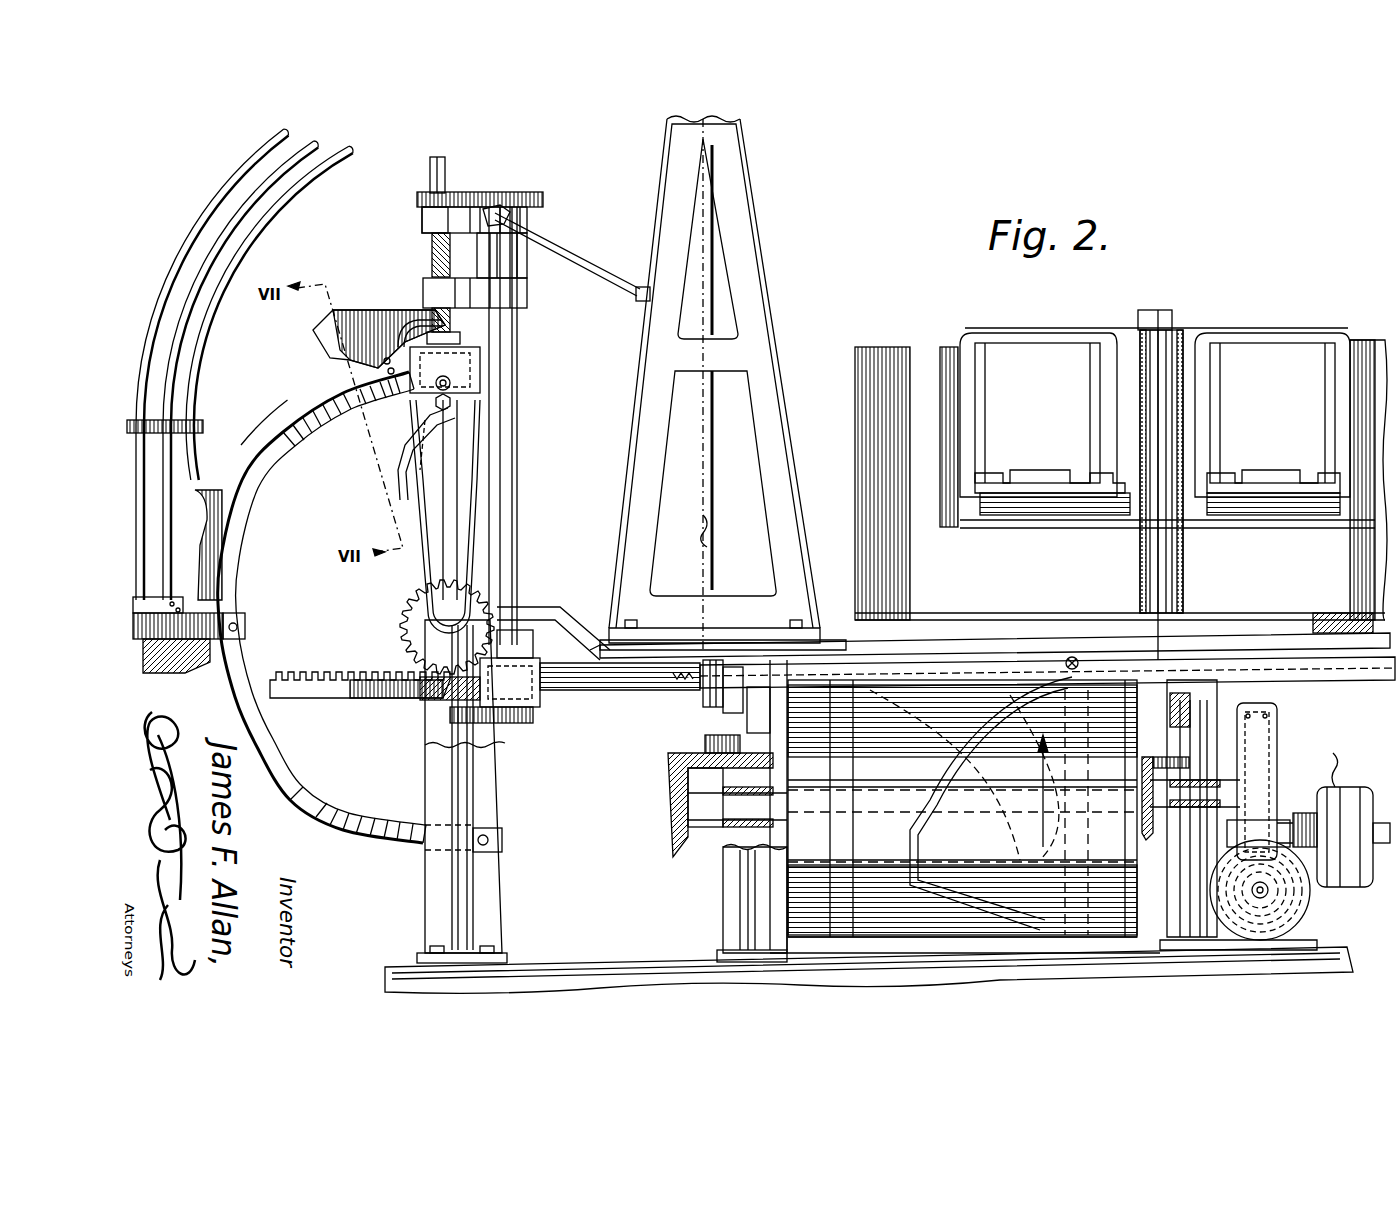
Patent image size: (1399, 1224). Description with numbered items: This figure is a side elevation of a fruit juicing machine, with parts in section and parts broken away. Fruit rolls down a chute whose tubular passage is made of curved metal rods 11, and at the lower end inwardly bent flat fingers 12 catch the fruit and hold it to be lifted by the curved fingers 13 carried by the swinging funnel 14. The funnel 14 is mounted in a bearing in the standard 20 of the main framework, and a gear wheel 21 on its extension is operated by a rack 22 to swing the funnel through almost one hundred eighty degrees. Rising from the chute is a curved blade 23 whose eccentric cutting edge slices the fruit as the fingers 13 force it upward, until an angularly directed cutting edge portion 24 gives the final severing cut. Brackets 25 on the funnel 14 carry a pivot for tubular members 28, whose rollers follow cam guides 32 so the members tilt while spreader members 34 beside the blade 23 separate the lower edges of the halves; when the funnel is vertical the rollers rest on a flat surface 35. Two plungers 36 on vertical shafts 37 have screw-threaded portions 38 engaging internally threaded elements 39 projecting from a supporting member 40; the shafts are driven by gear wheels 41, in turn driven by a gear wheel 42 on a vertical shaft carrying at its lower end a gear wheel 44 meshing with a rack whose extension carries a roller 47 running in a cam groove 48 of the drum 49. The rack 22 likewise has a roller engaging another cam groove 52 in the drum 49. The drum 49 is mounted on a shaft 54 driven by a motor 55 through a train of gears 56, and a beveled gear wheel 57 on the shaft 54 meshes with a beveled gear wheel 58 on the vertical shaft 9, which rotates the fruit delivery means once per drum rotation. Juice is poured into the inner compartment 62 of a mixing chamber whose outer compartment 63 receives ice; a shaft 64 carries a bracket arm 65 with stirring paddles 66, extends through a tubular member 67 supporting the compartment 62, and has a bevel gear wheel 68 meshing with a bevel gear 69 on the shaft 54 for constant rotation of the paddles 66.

The vertical shaft 9 is at (722, 480).
The curved metal rods 11 is at (163, 286).
The inwardly bent flat fingers 12 is at (160, 655).
The curved fingers 13 is at (402, 320).
The swinging funnel 14 is at (426, 572).
The standard 20 is at (406, 797).
The gear wheel 21 is at (400, 628).
The rack 22 is at (342, 672).
The curved blade 23 is at (222, 490).
The angularly directed cutting edge portion 24 is at (316, 353).
The brackets 25 is at (400, 414).
The tubular members 28 is at (476, 362).
The cam guides 32 is at (247, 716).
The spreader members 34 is at (330, 378).
The flat surface 35 is at (452, 385).
The plungers 36 is at (452, 344).
The vertical shafts 37 is at (447, 178).
The screw-threaded portions 38 is at (432, 250).
The internally threaded elements 39 is at (423, 286).
The supporting member 40 is at (527, 266).
The gear wheels 41 is at (417, 200).
The gear wheel 42 is at (532, 192).
The gear wheel 44 is at (540, 708).
The roller 47 is at (1097, 675).
The cam groove 48 is at (922, 849).
The drum 49 is at (1018, 791).
The cam groove 52 is at (845, 759).
The shaft 54 is at (702, 878).
The motor 55 is at (1353, 790).
The train of gears 56 is at (1270, 714).
The beveled gear wheel 57 is at (668, 834).
The beveled gear wheel 58 is at (704, 746).
The inner compartment 62 is at (1045, 345).
The outer compartment 63 is at (906, 350).
The shaft 64 is at (1183, 580).
The bracket arm 65 is at (1253, 332).
The stirring paddles 66 is at (1045, 478).
The tubular member 67 is at (1140, 580).
The bevel gear wheel 68 is at (1151, 760).
The bevel gear 69 is at (1142, 830).